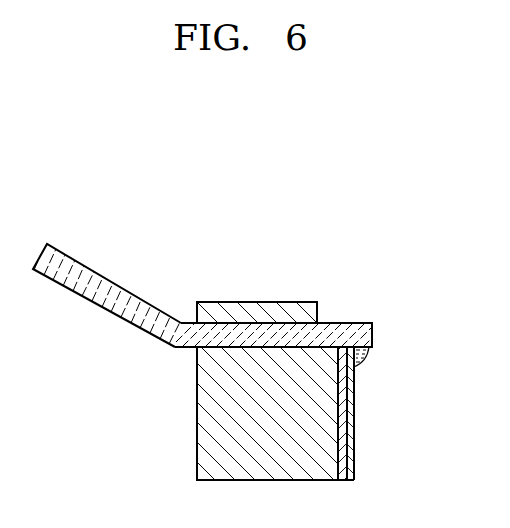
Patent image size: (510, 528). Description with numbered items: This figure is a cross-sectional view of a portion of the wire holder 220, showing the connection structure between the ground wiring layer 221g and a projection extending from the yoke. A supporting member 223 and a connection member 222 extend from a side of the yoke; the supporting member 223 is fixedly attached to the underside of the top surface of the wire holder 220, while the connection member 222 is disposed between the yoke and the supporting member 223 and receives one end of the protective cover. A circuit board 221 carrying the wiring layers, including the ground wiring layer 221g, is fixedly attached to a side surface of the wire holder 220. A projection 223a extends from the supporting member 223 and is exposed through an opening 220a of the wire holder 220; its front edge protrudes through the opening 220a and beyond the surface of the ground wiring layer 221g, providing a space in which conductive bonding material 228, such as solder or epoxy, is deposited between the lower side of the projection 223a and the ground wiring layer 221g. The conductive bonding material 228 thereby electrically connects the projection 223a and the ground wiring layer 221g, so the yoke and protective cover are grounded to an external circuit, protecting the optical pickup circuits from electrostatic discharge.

The wire holder 220 is at (186, 423).
The opening 220a is at (331, 322).
The circuit board 221 is at (342, 443).
The ground wiring layer 221g is at (354, 400).
The connection member 222 is at (103, 287).
The supporting member 223 is at (250, 310).
The projection 223a is at (364, 333).
The conductive bonding material 228 is at (366, 362).